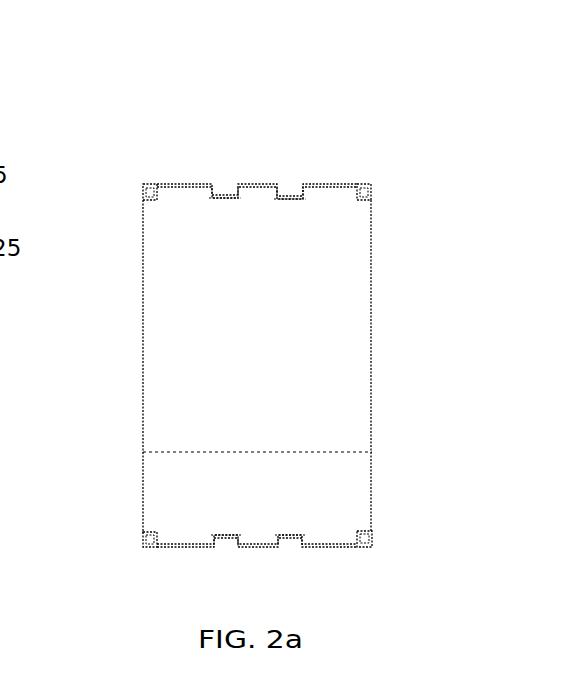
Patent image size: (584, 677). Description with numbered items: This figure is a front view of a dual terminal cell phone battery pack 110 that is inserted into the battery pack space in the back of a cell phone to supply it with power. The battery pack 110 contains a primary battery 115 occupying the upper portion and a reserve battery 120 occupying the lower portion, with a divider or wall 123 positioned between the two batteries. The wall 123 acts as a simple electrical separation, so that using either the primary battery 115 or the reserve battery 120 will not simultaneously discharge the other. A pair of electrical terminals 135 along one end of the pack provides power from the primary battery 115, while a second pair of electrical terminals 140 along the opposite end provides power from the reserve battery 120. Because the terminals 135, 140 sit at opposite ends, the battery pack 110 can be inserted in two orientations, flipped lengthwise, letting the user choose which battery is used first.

The cell phone battery pack 110 is at (184, 104).
The primary battery 115 is at (320, 324).
The reserve battery 120 is at (320, 498).
The divider or wall 123 is at (210, 448).
The electrical terminals 135 is at (189, 186).
The electrical terminals 140 is at (186, 556).